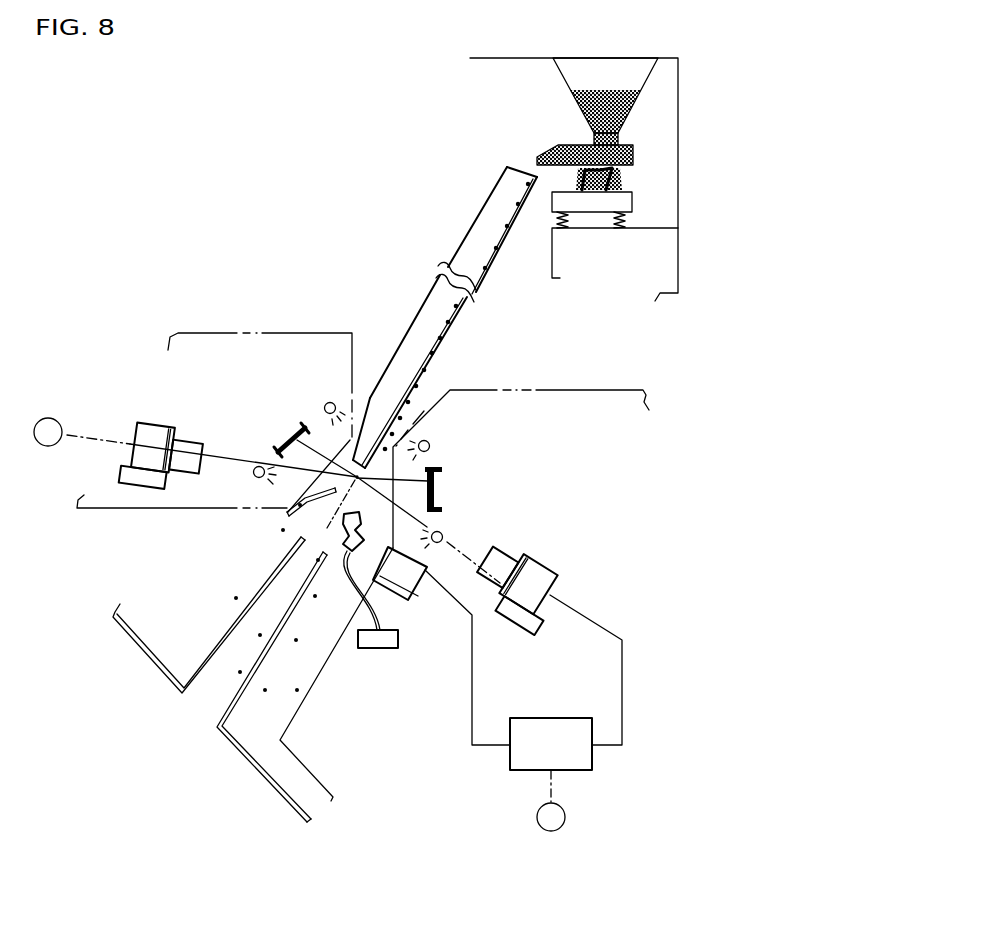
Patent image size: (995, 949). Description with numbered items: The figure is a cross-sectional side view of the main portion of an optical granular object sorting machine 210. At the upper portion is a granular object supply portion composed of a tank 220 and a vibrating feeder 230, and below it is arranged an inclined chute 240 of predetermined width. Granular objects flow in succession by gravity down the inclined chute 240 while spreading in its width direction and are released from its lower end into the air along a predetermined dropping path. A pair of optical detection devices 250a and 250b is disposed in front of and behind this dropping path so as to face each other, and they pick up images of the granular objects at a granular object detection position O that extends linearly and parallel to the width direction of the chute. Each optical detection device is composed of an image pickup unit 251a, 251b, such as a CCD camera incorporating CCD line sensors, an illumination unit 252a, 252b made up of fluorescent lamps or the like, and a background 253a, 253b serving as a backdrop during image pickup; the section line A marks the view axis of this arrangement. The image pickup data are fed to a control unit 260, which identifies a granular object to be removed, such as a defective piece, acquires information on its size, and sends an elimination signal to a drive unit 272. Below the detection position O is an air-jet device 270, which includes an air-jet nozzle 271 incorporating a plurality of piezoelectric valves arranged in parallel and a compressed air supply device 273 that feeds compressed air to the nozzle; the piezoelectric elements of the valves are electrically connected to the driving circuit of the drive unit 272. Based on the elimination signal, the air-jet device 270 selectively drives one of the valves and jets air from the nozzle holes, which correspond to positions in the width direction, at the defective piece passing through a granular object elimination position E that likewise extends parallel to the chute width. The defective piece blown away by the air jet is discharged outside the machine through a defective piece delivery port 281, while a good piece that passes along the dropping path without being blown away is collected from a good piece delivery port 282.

The optical granular object sorting machine 210 is at (340, 202).
The tank 220 is at (572, 70).
The vibrating feeder 230 is at (567, 150).
The inclined chute 240 is at (497, 192).
The optical detection device 250a is at (230, 345).
The optical detection device 250b is at (582, 398).
The image pickup unit 251a is at (147, 433).
The image pickup unit 251b is at (540, 578).
The illumination unit 252a is at (323, 398).
The illumination unit 252b is at (431, 443).
The background 253a is at (295, 432).
The background 253b is at (445, 480).
The control unit 260 is at (570, 758).
The air-jet device 270 is at (395, 596).
The air-jet nozzle 271 is at (366, 521).
The drive unit 272 is at (410, 590).
The compressed air supply device 273 is at (385, 640).
The defective piece delivery port 281 is at (260, 742).
The good piece delivery port 282 is at (205, 695).
The section line A- A is at (299, 624).
The granular object elimination position E is at (340, 507).
The granular object detection position O is at (355, 478).